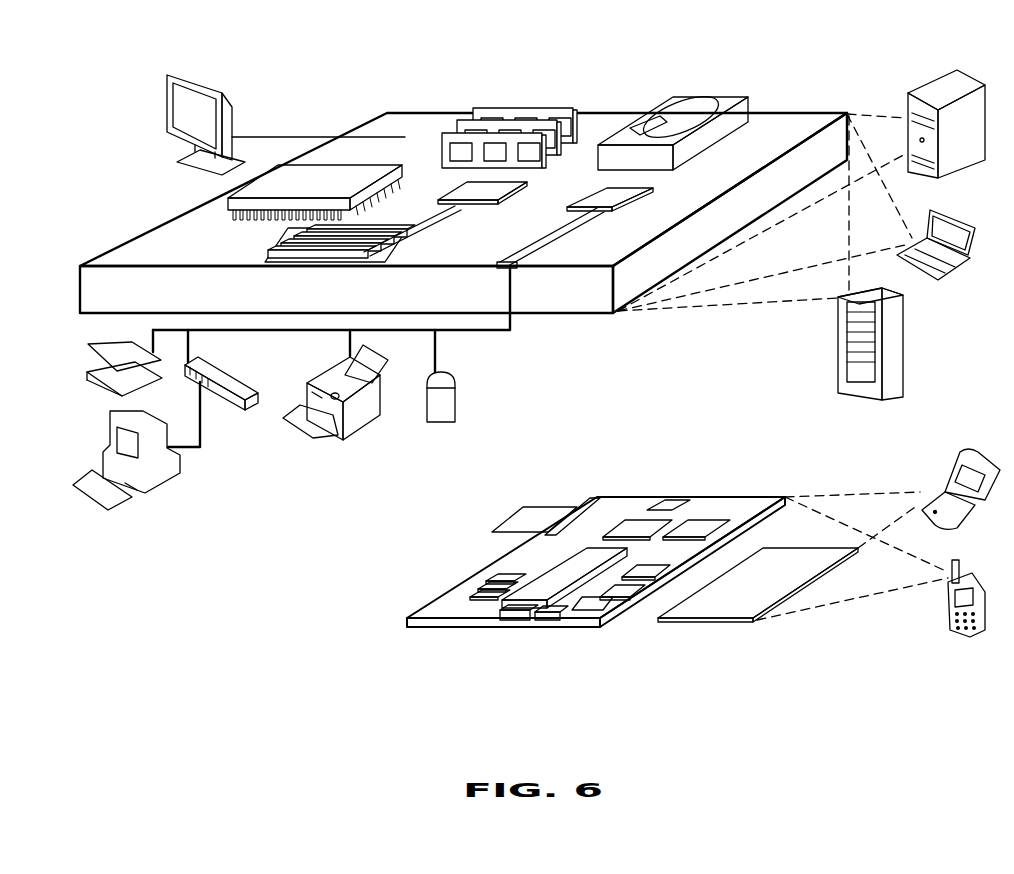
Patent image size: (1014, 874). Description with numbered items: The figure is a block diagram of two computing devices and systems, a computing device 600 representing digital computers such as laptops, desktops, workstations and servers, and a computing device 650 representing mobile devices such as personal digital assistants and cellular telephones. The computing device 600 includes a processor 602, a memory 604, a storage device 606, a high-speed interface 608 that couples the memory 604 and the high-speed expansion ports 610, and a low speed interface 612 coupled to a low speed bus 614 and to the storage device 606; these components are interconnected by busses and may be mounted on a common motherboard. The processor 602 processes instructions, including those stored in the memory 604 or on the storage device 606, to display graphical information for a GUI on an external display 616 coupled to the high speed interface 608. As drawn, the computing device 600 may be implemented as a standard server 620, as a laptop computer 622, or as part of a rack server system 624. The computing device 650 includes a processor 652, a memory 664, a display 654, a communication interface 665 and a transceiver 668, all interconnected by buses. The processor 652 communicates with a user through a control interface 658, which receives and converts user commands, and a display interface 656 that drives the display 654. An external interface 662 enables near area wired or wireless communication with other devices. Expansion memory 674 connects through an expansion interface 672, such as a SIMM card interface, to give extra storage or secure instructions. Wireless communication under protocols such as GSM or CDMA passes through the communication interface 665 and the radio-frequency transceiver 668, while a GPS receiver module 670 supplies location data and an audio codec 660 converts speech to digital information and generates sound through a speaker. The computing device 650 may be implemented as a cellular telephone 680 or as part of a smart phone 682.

The computing device 600 is at (330, 92).
The processor 602 is at (197, 204).
The memory 604 is at (490, 110).
The storage device 606 is at (666, 100).
The high-speed interface 608 is at (438, 198).
The high-speed expansion ports 610 is at (280, 246).
The low speed interface 612 is at (606, 196).
The low speed bus 614 is at (520, 268).
The display 616 is at (164, 76).
The standard server 620 is at (908, 96).
The laptop computer 622 is at (931, 210).
The rack server system 624 is at (838, 358).
The computing device 650 is at (582, 446).
The processor 652 is at (547, 615).
The display 654 is at (759, 622).
The display interface 656 is at (602, 630).
The control interface 658 is at (628, 600).
The audio codec 660 is at (645, 588).
The external interface 662 is at (518, 622).
The memory 664 is at (475, 583).
The communication interface 665 is at (638, 522).
The transceiver 668 is at (700, 520).
The GPS receiver module 670 is at (676, 502).
The expansion interface 672 is at (575, 503).
The expansion memory 674 is at (520, 507).
The cellular telephone 680 is at (965, 452).
The smart phone 682 is at (952, 562).